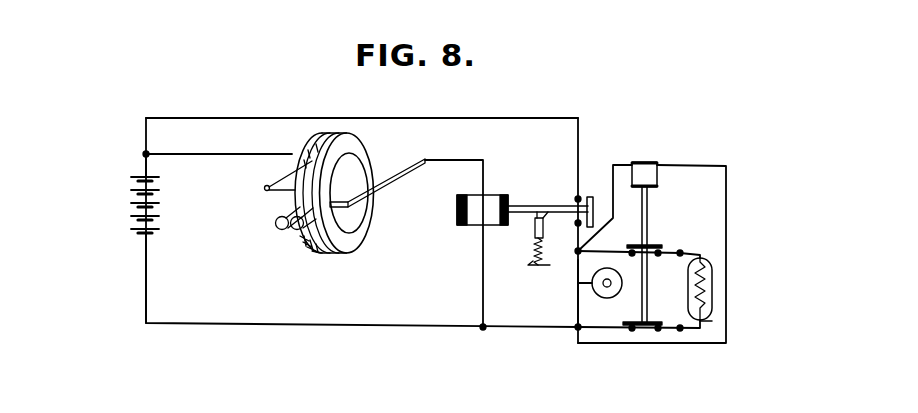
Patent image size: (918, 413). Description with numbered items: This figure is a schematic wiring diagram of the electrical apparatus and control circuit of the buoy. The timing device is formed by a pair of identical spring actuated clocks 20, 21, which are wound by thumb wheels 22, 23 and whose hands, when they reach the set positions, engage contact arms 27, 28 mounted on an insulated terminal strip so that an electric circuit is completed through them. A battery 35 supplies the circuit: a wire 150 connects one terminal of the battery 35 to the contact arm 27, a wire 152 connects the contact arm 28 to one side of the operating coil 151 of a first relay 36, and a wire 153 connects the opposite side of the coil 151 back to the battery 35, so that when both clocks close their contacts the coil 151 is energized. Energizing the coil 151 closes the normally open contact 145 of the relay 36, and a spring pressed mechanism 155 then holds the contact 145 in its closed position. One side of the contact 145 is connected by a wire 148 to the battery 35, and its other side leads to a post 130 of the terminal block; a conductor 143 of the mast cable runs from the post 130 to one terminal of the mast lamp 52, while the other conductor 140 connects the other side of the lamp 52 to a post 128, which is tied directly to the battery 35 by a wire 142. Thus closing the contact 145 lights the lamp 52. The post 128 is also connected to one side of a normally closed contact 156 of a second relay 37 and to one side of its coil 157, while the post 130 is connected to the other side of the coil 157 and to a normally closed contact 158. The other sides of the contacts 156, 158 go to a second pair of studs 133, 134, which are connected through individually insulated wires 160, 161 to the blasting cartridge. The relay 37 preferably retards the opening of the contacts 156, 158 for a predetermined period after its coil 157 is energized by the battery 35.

The clock 20 is at (308, 146).
The clock 21 is at (343, 144).
The thumb wheel 22 is at (280, 231).
The thumb wheel 23 is at (297, 231).
The contact arm 27 is at (276, 182).
The contact arm 28 is at (397, 180).
The battery 35 is at (131, 221).
The relay 36 is at (518, 193).
The relay 37 is at (652, 217).
The lamp 52 is at (625, 275).
The post 128 is at (579, 327).
The post 130 is at (623, 230).
The stud 133 is at (681, 331).
The stud 134 is at (683, 252).
The conductor 140 is at (578, 303).
The wire 142 is at (365, 328).
The conductor 143 is at (578, 267).
The normally open contact 145 is at (595, 199).
The wire 148 is at (261, 116).
The wire 150 is at (203, 152).
The operating coil 151 is at (477, 218).
The wire 152 is at (470, 159).
The wire 153 is at (483, 287).
The spring pressed mechanism 155 is at (535, 252).
The normally closed contact 156 is at (653, 320).
The coil 157 is at (657, 165).
The normally closed contact 158 is at (655, 246).
The wire 160 is at (712, 321).
The wire 161 is at (702, 256).